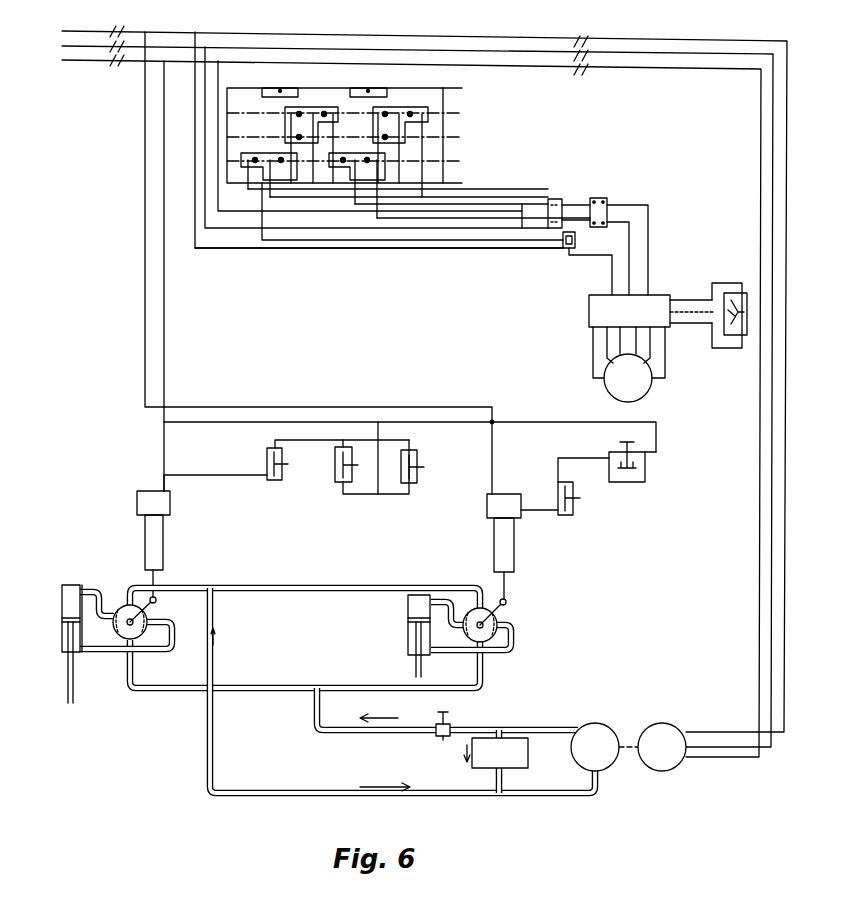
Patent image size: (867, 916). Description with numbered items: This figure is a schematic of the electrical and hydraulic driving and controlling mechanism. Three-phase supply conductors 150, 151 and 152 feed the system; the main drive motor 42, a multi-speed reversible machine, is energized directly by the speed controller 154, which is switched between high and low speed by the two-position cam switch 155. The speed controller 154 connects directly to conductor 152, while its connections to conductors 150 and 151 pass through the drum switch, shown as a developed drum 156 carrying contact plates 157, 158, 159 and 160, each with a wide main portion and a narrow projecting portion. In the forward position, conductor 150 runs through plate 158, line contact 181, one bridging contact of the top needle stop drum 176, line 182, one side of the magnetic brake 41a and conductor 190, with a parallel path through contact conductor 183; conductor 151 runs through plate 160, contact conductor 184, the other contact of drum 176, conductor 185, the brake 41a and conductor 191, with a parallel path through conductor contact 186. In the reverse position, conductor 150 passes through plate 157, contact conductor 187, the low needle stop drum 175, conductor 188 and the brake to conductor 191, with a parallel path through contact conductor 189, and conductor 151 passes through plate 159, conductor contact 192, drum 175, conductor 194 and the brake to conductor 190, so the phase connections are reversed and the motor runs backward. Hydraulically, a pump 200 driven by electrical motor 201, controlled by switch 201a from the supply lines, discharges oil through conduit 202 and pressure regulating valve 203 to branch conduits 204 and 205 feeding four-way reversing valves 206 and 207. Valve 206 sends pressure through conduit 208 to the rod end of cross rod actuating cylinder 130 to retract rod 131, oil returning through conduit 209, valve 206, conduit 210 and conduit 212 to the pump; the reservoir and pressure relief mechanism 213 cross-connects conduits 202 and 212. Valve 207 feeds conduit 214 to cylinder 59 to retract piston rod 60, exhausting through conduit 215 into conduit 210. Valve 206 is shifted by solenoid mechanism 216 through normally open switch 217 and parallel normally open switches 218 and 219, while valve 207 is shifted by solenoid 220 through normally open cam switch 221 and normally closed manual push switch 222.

The supply conductor 152 is at (150, 406).
The supply conductor 151 is at (417, 389).
The supply conductor 150 is at (204, 430).
The switch 201a is at (586, 66).
The drum 156 is at (393, 137).
The contact plate 157 is at (269, 167).
The contact plate 158 is at (311, 137).
The contact plate 159 is at (357, 178).
The contact plate 160 is at (400, 144).
The contact conductor 189 is at (258, 188).
The line contact 181 is at (336, 249).
The contact conductor 184 is at (386, 241).
The conductor contact 192 is at (432, 229).
The contact conductor 183 is at (482, 219).
The contact conductor 187 is at (520, 212).
The conductor 194 is at (560, 230).
The insulating drum 176 is at (574, 252).
The conductor contact 186 is at (552, 198).
The insulating drum 175 is at (560, 200).
The conductor 188 is at (585, 205).
The conductor 185 is at (568, 203).
The magnetic brake 41a is at (607, 210).
The line 182 is at (576, 238).
The conductor 191 is at (649, 240).
The conductor 190 is at (630, 263).
The speed controller 154 is at (651, 336).
The main drive motor 42 is at (628, 378).
The two-position cam switch 155 is at (733, 338).
The solenoid mechanism 216 is at (164, 536).
The normally open switch 217 is at (283, 458).
The normally open switch 218 is at (352, 474).
The switch 219 is at (419, 470).
The solenoid 220 is at (514, 549).
The normally open cam switch 221 is at (574, 515).
The normally closed manual push switch 222 is at (646, 478).
The conduit 210 is at (244, 592).
The branch conduit 204 is at (272, 678).
The branch conduit 205 is at (398, 665).
The conduit 212 is at (402, 690).
The conduit 202 is at (482, 727).
The conduit 209 is at (110, 584).
The conduit 208 is at (176, 640).
The conduit 214 is at (514, 640).
The conduit 215 is at (452, 602).
The reservoir and pressure relief mechanism 213 is at (496, 761).
The pressure regulating valve 203 is at (444, 716).
The cross rod actuating cylinder 130 is at (62, 606).
The rod 131 is at (66, 683).
The four-way reversing valve 206 is at (146, 614).
The four-way reversing valve 207 is at (496, 615).
The cylinder 59 is at (408, 606).
The piston rod 60 is at (422, 665).
The pump 200 is at (608, 716).
The electrical motor 201 is at (678, 716).